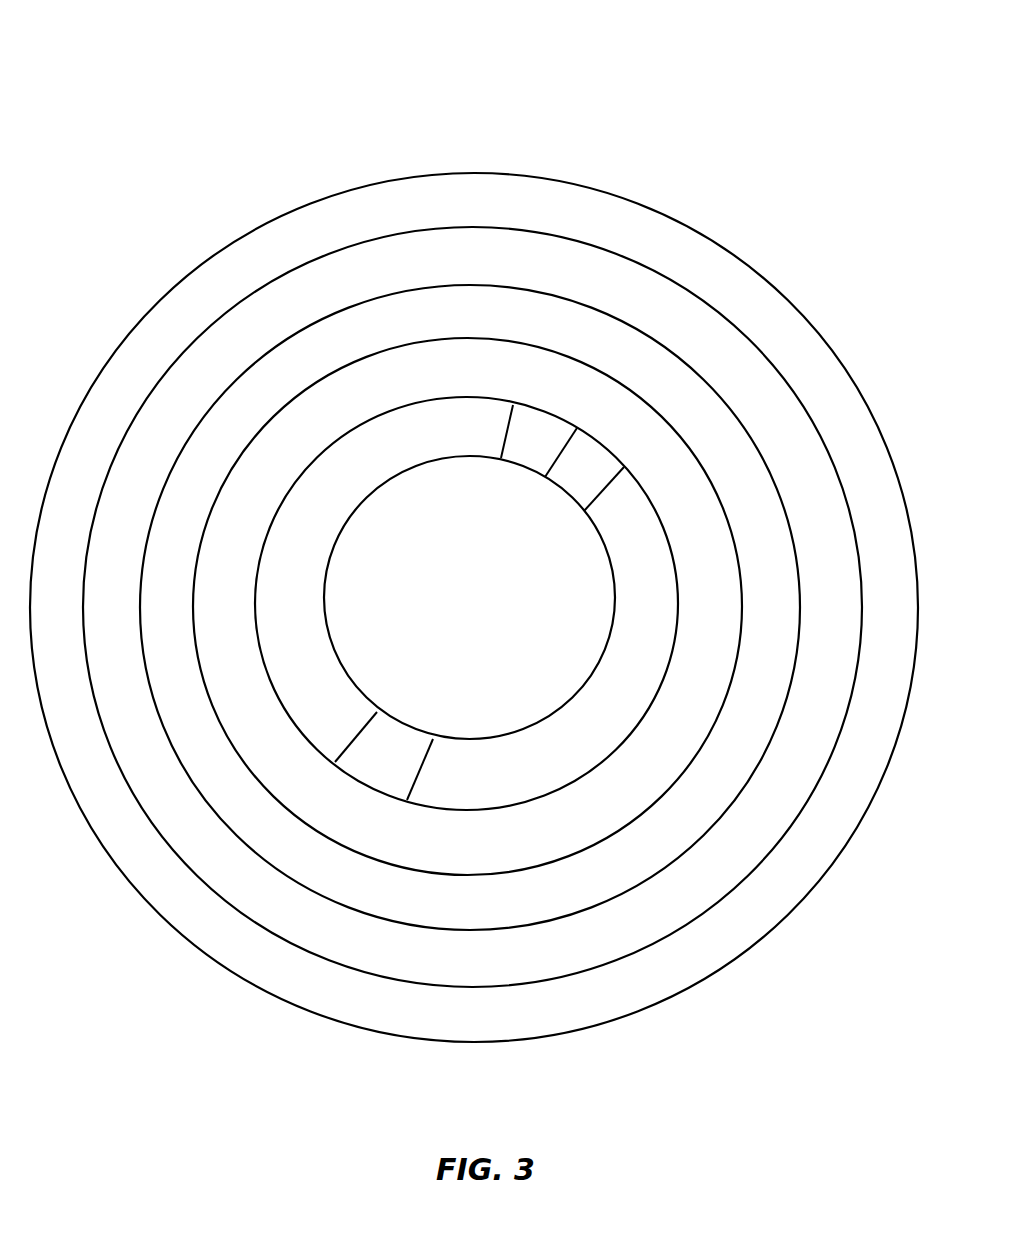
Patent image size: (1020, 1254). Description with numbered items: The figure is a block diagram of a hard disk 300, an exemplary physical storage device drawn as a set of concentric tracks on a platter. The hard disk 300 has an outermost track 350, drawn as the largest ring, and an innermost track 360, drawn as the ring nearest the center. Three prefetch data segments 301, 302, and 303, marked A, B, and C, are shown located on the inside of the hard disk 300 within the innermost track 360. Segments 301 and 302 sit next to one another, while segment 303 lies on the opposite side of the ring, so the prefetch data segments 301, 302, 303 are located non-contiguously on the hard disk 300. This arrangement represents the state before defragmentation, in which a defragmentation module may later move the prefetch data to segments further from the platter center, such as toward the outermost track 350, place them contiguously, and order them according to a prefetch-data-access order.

The hard disk 300 is at (155, 116).
The outermost track 350 is at (369, 218).
The innermost track 360 is at (373, 450).
The prefetch data segment 301 is at (549, 405).
The prefetch data segment 302 is at (610, 442).
The prefetch data segment 303 is at (360, 785).